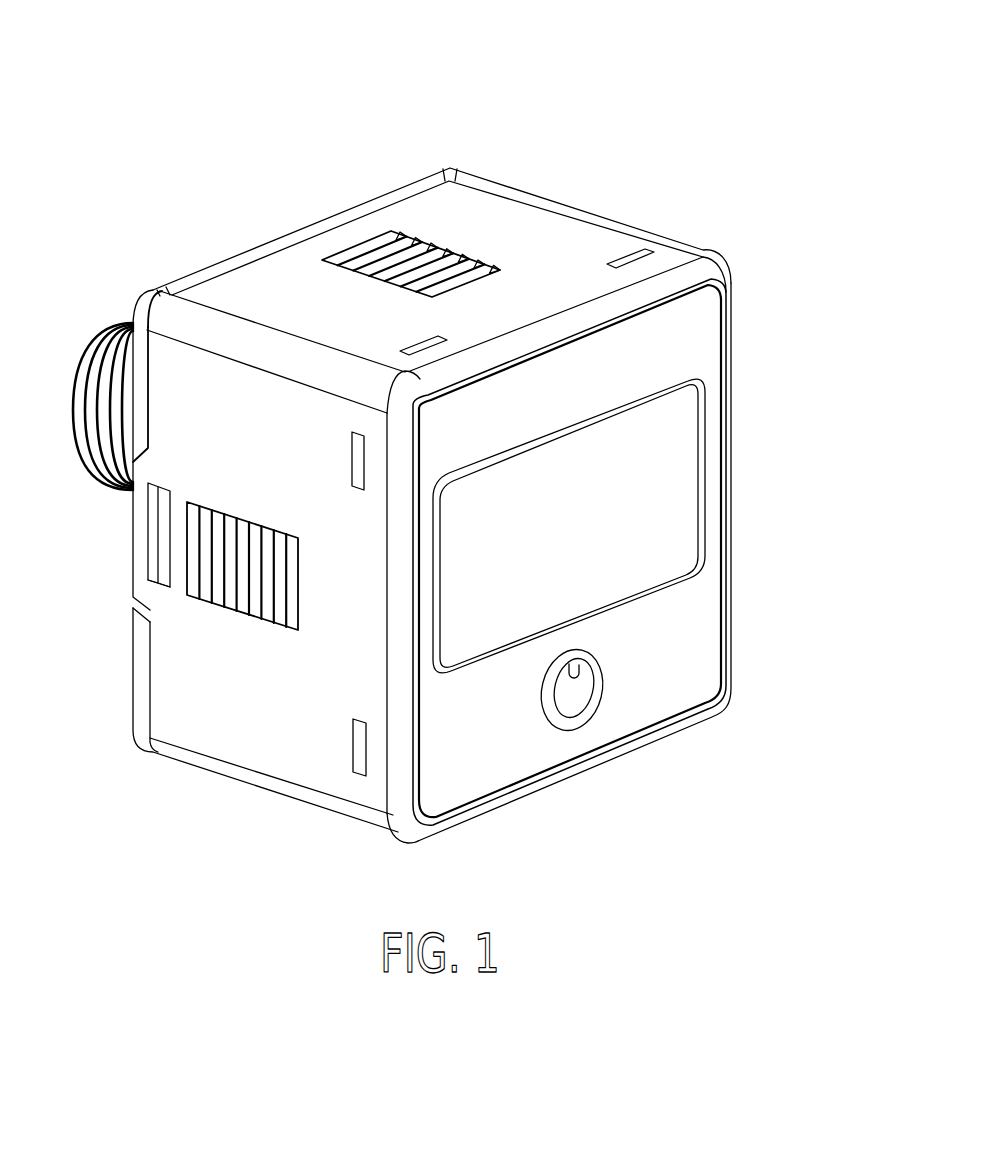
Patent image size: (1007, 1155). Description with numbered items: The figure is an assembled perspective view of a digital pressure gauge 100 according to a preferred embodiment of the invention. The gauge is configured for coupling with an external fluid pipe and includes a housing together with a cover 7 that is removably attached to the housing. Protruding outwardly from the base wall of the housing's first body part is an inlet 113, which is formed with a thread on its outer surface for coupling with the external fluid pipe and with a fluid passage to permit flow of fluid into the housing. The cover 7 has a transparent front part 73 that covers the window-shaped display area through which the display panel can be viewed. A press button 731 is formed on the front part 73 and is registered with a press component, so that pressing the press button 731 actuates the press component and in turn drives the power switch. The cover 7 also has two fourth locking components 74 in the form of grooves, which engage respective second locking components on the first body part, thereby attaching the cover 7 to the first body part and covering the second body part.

The digital pressure gauge 100 is at (652, 93).
The cover 7 is at (578, 192).
The transparent front part 73 is at (746, 324).
The press button 731 is at (578, 695).
The inlet 113 is at (90, 392).
The fourth locking components 74 is at (150, 533).